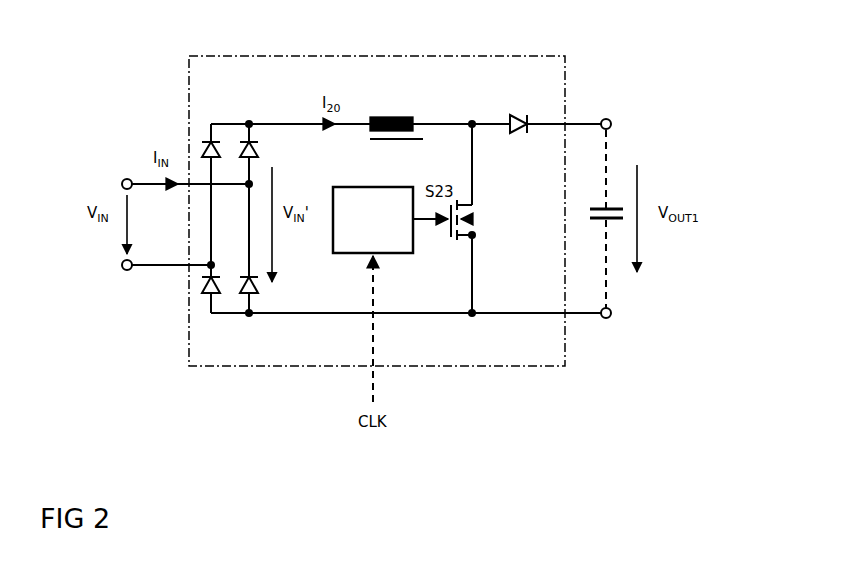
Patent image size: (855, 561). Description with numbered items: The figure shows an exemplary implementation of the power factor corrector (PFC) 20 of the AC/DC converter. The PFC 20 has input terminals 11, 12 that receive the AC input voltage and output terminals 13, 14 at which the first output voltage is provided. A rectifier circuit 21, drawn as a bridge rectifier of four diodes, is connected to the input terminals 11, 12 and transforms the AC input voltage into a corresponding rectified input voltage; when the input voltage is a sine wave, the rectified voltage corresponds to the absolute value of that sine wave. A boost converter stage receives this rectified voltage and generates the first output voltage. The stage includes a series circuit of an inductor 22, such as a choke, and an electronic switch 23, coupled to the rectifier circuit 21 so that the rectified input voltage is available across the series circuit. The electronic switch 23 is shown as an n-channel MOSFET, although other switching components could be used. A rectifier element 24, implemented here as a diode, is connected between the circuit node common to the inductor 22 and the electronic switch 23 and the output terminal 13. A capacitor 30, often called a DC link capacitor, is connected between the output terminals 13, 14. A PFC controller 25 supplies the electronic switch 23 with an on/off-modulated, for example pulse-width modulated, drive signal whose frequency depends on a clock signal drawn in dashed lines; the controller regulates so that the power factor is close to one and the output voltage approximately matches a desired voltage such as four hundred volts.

The input terminal 11 is at (127, 178).
The input terminal 12 is at (125, 270).
The output terminal 13 is at (607, 118).
The output terminal 14 is at (605, 319).
The power factor corrector 20 is at (377, 201).
The rectifier circuit 21 is at (232, 113).
The inductor 22 is at (392, 113).
The electronic switch 23 is at (483, 224).
The rectifier element 24 is at (518, 113).
The PFC controller 25 is at (383, 183).
The capacitor 30 is at (598, 207).